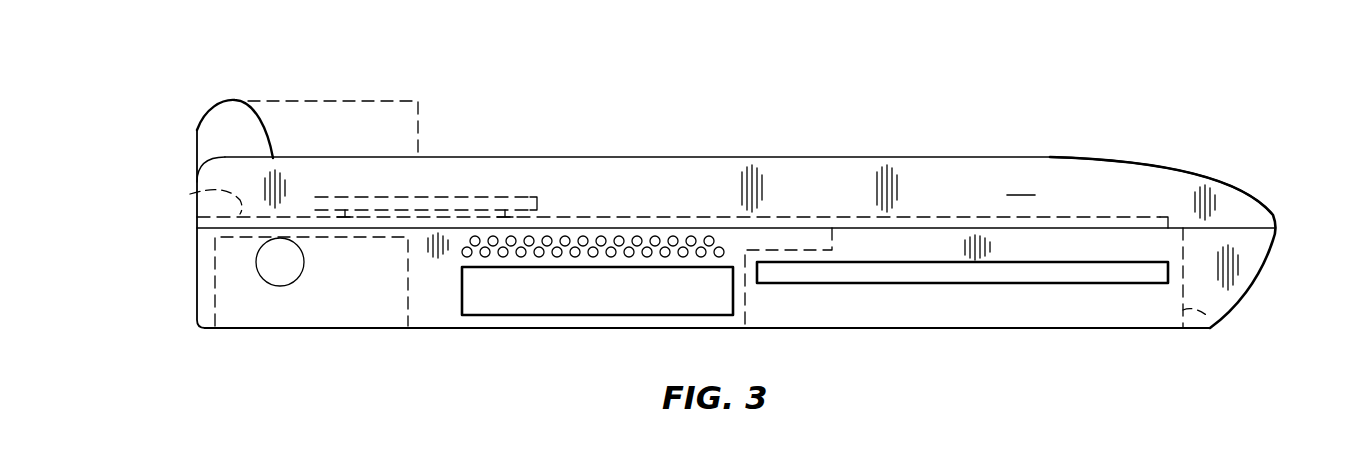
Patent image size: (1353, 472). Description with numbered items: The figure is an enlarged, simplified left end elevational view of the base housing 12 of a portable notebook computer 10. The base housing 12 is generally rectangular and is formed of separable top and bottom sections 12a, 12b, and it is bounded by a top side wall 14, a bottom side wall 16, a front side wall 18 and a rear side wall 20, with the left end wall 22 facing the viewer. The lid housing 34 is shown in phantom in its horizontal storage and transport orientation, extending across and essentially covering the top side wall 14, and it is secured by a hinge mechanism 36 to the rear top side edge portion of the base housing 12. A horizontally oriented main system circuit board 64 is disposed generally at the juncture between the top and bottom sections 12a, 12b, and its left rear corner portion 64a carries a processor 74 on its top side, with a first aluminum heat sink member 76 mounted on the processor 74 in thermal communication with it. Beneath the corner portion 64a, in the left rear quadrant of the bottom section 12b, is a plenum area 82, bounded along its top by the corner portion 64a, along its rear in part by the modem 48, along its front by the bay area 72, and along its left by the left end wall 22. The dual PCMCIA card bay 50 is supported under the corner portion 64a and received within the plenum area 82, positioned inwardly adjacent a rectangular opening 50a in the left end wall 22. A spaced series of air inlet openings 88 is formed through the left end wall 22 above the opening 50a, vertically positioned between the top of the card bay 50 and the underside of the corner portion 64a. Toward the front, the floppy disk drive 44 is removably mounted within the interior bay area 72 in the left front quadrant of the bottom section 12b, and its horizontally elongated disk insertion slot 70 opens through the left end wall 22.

The portable notebook computer 10 is at (1162, 93).
The base housing 12 is at (1265, 168).
The top section of base housing 12a is at (945, 172).
The bottom section of base housing 12b is at (1006, 306).
The top side wall 14 is at (772, 157).
The bottom side wall 16 is at (432, 328).
The front side wall 18 is at (1276, 254).
The rear side wall 20 is at (197, 268).
The left end wall 22 is at (1021, 183).
The lid housing 34 is at (362, 93).
The hinge mechanism 36 is at (185, 143).
The floppy disk drive 44 is at (1210, 318).
The modem 48 is at (212, 298).
The dual PCMCIA card bay 50 is at (495, 317).
The rectangular opening 50a is at (655, 302).
The main system circuit board 64 is at (1112, 202).
The left rear corner portion of circuit board 64a is at (190, 194).
The disk insertion slot 70 is at (1128, 275).
The interior base housing bay area 72 is at (797, 255).
The processor 74 is at (458, 205).
The first aluminum heat sink member 76 is at (527, 198).
The plenum area 82 is at (432, 297).
The air inlet openings 88 is at (638, 240).